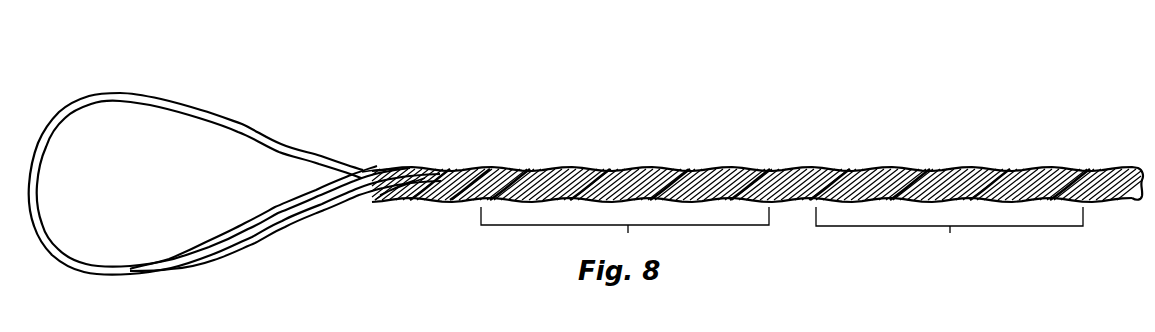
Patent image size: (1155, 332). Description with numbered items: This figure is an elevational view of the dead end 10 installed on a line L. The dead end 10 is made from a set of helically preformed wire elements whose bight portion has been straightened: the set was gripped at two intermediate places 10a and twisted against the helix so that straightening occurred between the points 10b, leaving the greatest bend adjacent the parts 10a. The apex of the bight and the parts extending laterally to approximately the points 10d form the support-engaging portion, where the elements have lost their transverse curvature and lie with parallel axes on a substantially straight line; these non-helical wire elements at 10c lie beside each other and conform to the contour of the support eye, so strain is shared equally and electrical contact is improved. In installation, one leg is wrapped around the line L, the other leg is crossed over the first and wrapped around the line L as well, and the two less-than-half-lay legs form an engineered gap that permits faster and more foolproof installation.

The dead end 10 is at (579, 169).
The intermediate places 10a is at (421, 172).
The points 10b is at (359, 170).
The non-helical wire elements 10c is at (36, 186).
The points 10d is at (72, 113).
The line L is at (466, 203).